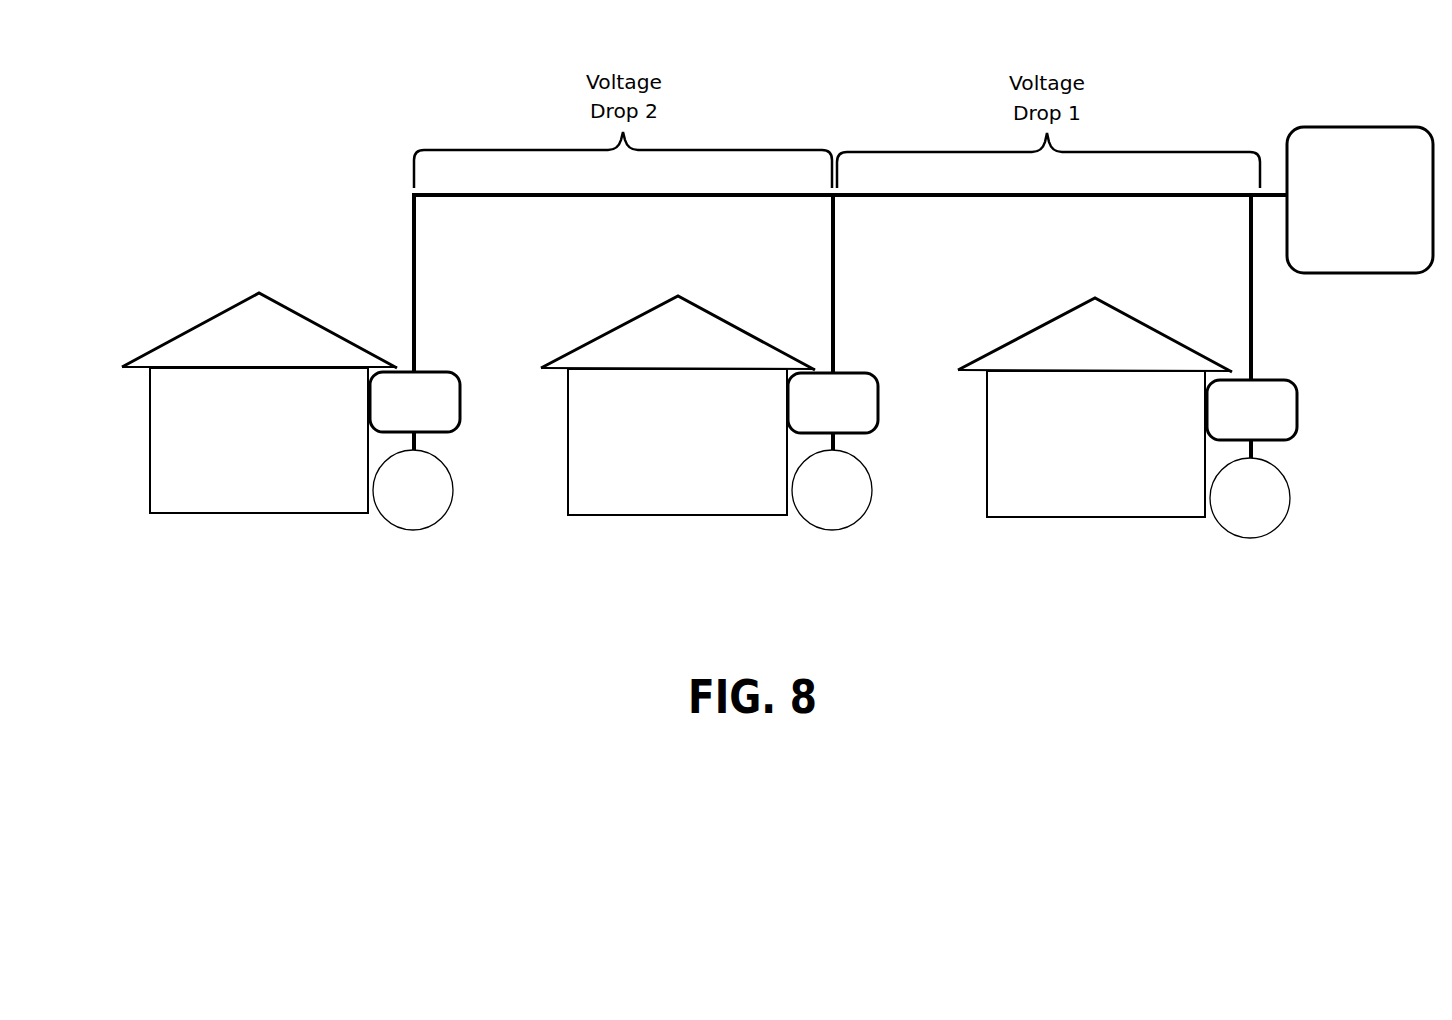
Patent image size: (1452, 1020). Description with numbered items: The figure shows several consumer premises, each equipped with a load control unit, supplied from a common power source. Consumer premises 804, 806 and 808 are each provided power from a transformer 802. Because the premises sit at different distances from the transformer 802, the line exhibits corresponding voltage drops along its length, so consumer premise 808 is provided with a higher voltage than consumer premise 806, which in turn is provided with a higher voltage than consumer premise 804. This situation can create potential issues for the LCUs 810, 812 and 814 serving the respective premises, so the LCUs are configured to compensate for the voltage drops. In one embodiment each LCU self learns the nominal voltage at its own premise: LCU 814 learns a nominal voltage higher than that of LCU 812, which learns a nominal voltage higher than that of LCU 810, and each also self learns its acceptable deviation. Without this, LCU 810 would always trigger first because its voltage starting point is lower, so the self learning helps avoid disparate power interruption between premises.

The transformer 802 is at (1373, 125).
The consumer premise 804 is at (279, 304).
The consumer premise 806 is at (718, 322).
The consumer premise 808 is at (1143, 323).
The LCU 810 is at (441, 373).
The LCU 812 is at (864, 373).
The LCU 814 is at (1284, 383).